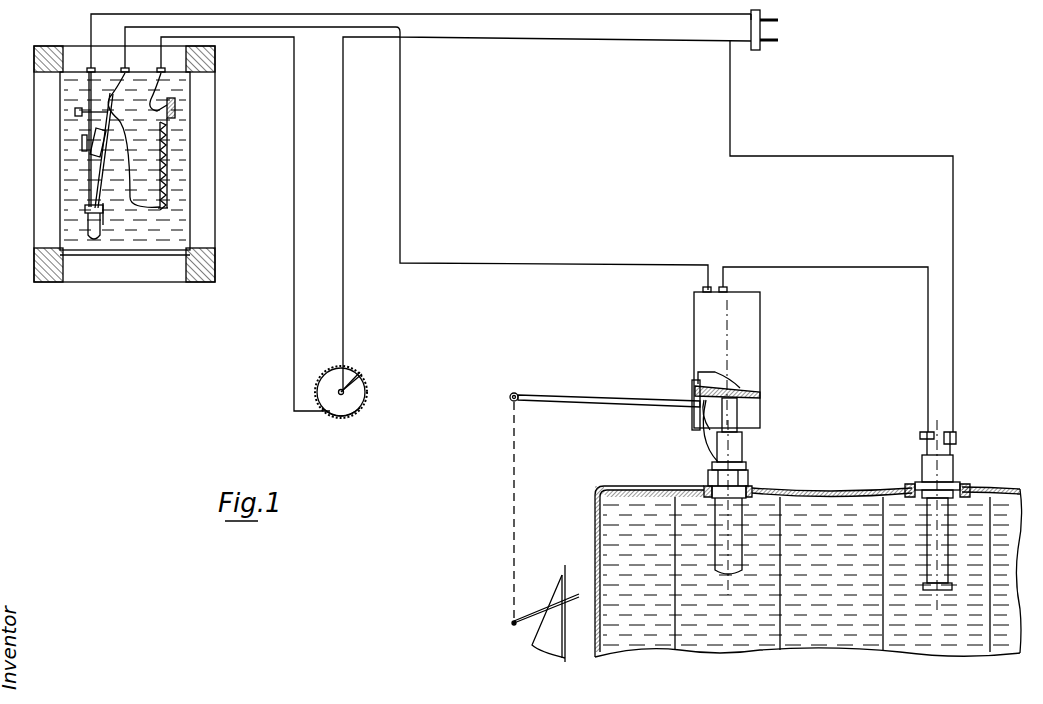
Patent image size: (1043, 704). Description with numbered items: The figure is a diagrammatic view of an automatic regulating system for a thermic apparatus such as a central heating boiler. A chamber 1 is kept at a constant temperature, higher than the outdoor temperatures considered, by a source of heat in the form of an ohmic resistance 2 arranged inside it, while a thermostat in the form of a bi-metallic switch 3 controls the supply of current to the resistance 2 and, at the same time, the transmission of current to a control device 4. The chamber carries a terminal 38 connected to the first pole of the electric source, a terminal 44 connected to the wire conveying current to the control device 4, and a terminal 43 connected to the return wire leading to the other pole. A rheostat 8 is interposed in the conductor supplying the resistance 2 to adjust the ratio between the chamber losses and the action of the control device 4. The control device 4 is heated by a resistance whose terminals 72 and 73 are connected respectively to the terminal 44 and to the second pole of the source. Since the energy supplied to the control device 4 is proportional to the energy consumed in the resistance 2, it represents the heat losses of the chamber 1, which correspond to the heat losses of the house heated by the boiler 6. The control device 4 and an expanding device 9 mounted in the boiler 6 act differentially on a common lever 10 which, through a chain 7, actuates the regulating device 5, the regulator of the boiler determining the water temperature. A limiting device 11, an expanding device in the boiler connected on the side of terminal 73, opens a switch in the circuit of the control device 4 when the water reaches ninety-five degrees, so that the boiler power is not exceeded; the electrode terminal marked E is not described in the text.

The chamber 1 is at (205, 166).
The ohmic resistance 2 is at (165, 142).
The bi-metallic switch 3 is at (93, 158).
The terminal 38 is at (419, 43).
The terminal 44 is at (537, 229).
The terminal 43 is at (243, 224).
The rheostat 8 is at (365, 381).
The control device 4 is at (748, 355).
The terminal 72 is at (703, 290).
The terminal 73 is at (727, 290).
The lever 10 is at (620, 398).
The chain 7 is at (517, 530).
The regulating device 5 is at (532, 620).
The boiler 6 is at (832, 505).
The expanding device 9 is at (742, 528).
The limiting device 11 is at (942, 525).
The electrode terminal E is at (950, 457).